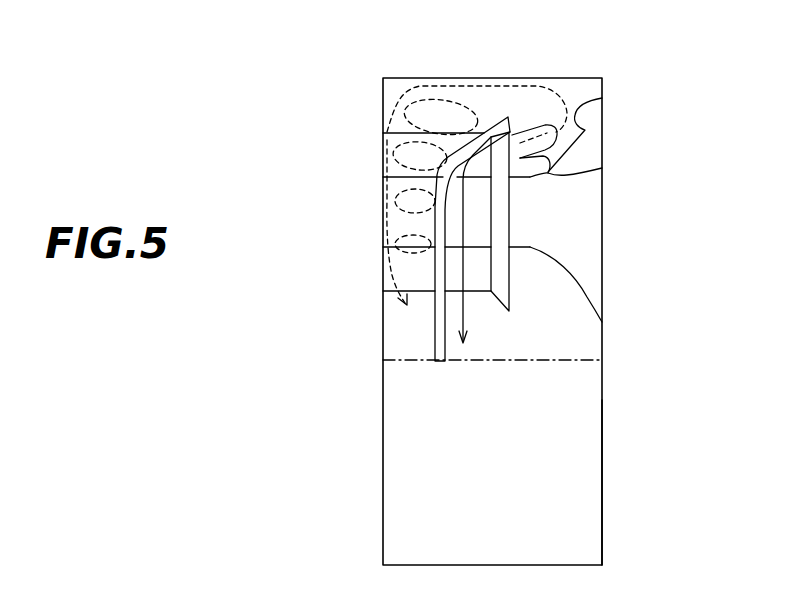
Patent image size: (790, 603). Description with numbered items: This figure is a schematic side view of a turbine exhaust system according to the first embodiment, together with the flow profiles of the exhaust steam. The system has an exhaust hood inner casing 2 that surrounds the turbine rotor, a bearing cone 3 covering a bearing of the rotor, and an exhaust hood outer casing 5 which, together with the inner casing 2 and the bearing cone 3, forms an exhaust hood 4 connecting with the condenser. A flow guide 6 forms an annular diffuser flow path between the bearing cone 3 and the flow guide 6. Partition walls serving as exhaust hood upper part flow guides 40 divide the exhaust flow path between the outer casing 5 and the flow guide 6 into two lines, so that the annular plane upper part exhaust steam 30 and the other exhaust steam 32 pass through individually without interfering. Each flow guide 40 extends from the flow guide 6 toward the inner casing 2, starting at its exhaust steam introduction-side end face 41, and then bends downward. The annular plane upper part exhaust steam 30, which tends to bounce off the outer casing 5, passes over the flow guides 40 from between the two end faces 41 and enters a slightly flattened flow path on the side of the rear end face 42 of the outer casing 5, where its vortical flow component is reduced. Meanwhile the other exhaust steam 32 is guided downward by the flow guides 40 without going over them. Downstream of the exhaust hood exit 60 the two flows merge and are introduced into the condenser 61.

The exhaust hood inner casing 2 is at (398, 132).
The bearing cone 3 is at (602, 98).
The exhaust hood 4 is at (588, 313).
The exhaust hood outer casing 5 is at (408, 78).
The flow guide 6 is at (510, 297).
The annular plane upper part exhaust steam 30 is at (477, 85).
The other exhaust steam 32 is at (602, 168).
The exhaust hood upper part flow guide 40 is at (422, 336).
The exhaust steam introduction-side end face 41 is at (512, 132).
The rear end face 42 is at (383, 152).
The exhaust hood exit 60 is at (556, 349).
The condenser 61 is at (603, 480).